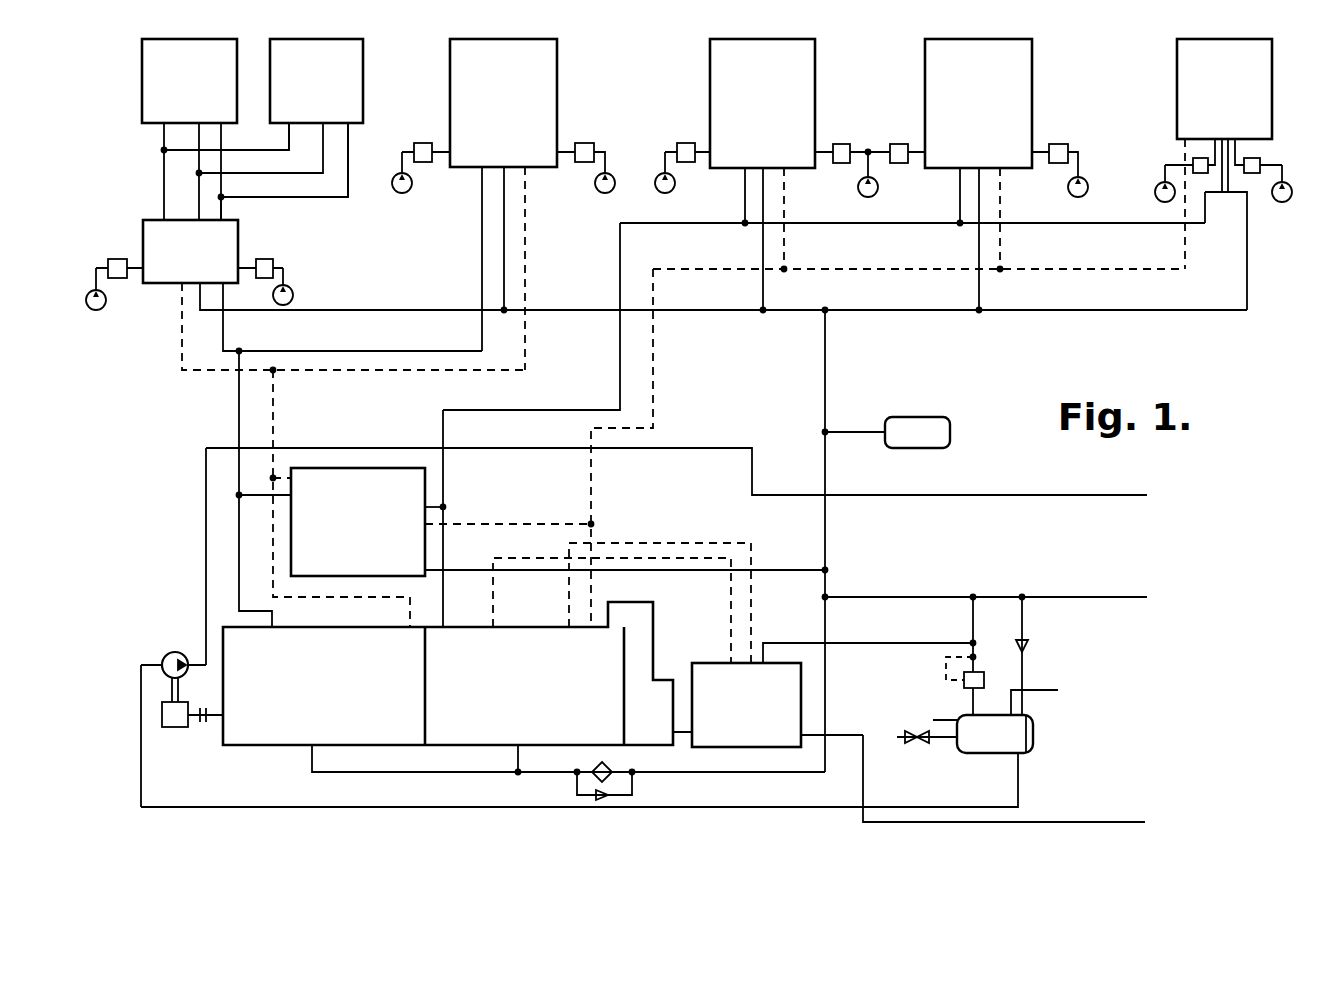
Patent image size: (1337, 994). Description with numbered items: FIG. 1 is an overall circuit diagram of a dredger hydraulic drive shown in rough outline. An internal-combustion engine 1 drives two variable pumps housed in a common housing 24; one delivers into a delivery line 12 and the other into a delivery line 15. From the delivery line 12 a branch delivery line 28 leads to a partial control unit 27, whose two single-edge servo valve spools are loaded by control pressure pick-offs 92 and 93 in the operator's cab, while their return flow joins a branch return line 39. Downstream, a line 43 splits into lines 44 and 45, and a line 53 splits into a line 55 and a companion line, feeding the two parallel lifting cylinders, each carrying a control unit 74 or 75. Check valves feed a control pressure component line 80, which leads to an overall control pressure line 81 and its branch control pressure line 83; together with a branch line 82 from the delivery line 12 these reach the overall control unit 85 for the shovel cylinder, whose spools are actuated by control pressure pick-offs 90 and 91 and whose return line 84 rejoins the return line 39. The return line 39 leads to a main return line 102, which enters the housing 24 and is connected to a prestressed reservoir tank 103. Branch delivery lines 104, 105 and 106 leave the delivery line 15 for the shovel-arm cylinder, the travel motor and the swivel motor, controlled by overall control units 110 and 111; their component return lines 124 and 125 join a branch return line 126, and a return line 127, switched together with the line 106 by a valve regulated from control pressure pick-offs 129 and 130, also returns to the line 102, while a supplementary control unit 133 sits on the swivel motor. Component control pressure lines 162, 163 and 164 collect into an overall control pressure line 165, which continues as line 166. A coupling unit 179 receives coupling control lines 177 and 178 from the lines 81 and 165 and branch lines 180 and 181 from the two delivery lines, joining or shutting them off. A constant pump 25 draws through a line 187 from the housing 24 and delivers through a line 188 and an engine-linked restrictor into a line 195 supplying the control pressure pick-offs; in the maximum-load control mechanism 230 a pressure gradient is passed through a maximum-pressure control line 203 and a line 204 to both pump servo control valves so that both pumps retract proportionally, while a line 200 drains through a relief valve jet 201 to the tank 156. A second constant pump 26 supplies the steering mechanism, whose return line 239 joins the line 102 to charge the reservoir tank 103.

The internal-combustion engine 1 is at (175, 727).
The delivery line 12 is at (239, 408).
The delivery line 15 is at (443, 430).
The common housing 24 is at (290, 745).
The constant pump 25 is at (86, 300).
The constant pump 26 is at (175, 652).
The partial control unit 27 is at (190, 251).
The branch delivery line 28 is at (224, 332).
The branch return line 39 is at (199, 180).
The line 43 is at (221, 213).
The line 44 is at (221, 185).
The line 45 is at (304, 186).
The line 53 is at (164, 163).
The line 55 is at (232, 150).
The control unit 74 is at (189, 81).
The control unit 75 is at (316, 81).
The control pressure component line 80 is at (182, 352).
The overall control pressure line 81 is at (273, 402).
The branch line 82 is at (482, 282).
The branch control pressure line 83 is at (525, 288).
The return line 84 is at (504, 258).
The overall control unit 85 is at (503, 103).
The control pressure pick-off 90 is at (584, 162).
The control pressure pick-off 91 is at (430, 162).
The control pressure pick-off 92 is at (266, 259).
The control pressure pick-off 93 is at (122, 259).
The main return line 102 is at (825, 390).
The prestressed reservoir tank 103 is at (950, 425).
The branch delivery line 104 is at (745, 205).
The branch delivery line 105 is at (960, 205).
The branch delivery line 106 is at (1057, 223).
The overall control unit 110 is at (762, 103).
The overall control unit 111 is at (978, 103).
The component return line 124 is at (763, 294).
The component return line 125 is at (979, 292).
The branch return line 126 is at (945, 310).
The return line 127 is at (1247, 250).
The control pressure pick-off 129 is at (1260, 160).
The control pressure pick-off 130 is at (1193, 160).
The supplementary control unit 133 is at (1224, 89).
The tank 156 is at (599, 702).
The component control pressure line 162 is at (784, 250).
The component control pressure line 163 is at (1000, 250).
The component control pressure line 164 is at (1188, 272).
The overall control pressure line 165 is at (708, 269).
The line 166 is at (591, 540).
The coupling control line 177 is at (278, 478).
The coupling control line 178 is at (515, 524).
The coupling unit 179 is at (358, 522).
The branch line 180 is at (239, 495).
The branch line 181 is at (443, 505).
The line 187 is at (653, 634).
The line 188 is at (680, 740).
The line 195 is at (96, 268).
The line 200 is at (855, 643).
The relief valve jet 201 is at (964, 683).
The maximum-pressure control line 203 is at (731, 590).
The control line 204 is at (750, 590).
The maximum-load control mechanism 230 is at (746, 705).
The line 239 is at (870, 597).